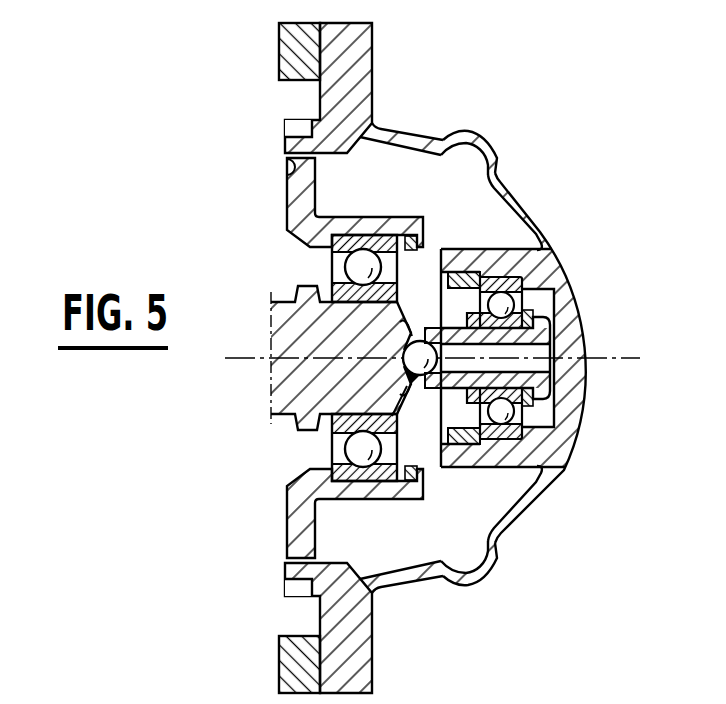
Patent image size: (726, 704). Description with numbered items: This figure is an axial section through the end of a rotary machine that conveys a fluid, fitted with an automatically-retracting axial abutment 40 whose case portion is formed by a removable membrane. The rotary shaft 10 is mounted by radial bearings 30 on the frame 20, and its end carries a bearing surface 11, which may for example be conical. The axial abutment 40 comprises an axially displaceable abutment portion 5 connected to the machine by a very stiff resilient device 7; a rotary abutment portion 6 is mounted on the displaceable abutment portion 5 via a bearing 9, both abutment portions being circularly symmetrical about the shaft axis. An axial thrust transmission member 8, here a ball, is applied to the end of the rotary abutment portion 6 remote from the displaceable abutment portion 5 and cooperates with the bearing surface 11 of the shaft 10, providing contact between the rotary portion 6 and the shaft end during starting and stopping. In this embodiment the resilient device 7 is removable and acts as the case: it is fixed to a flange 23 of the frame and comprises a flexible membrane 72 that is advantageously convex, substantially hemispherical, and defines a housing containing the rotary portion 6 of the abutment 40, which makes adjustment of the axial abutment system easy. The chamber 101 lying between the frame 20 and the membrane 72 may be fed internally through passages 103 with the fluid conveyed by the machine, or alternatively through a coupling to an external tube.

The displaceable abutment portion 5 is at (547, 242).
The rotary abutment portion 6 is at (520, 348).
The resilient device 7 is at (513, 195).
The axial thrust transmission member 8 is at (418, 377).
The bearing 9 is at (522, 280).
The rotary shaft 10 is at (283, 404).
The bearing surface 11 is at (400, 330).
The frame 20 is at (293, 533).
The flange 23 is at (292, 55).
The radial bearings 30 is at (318, 265).
The axial abutment 40 is at (470, 476).
The flexible membrane 72 is at (418, 133).
The chamber 101 is at (338, 191).
The passages 103 is at (290, 170).